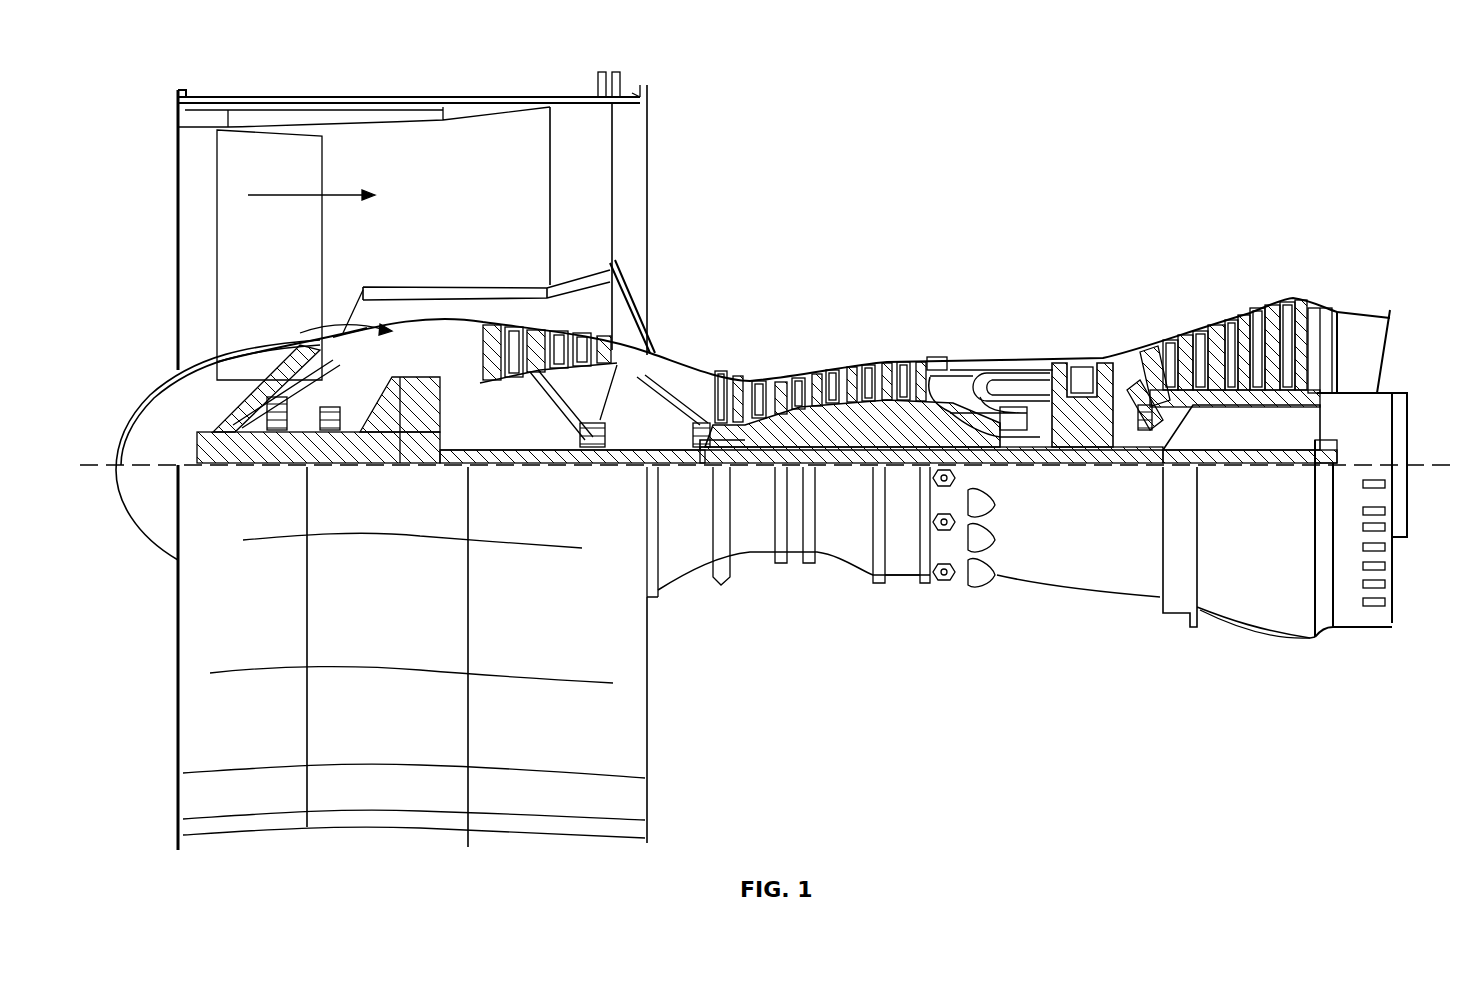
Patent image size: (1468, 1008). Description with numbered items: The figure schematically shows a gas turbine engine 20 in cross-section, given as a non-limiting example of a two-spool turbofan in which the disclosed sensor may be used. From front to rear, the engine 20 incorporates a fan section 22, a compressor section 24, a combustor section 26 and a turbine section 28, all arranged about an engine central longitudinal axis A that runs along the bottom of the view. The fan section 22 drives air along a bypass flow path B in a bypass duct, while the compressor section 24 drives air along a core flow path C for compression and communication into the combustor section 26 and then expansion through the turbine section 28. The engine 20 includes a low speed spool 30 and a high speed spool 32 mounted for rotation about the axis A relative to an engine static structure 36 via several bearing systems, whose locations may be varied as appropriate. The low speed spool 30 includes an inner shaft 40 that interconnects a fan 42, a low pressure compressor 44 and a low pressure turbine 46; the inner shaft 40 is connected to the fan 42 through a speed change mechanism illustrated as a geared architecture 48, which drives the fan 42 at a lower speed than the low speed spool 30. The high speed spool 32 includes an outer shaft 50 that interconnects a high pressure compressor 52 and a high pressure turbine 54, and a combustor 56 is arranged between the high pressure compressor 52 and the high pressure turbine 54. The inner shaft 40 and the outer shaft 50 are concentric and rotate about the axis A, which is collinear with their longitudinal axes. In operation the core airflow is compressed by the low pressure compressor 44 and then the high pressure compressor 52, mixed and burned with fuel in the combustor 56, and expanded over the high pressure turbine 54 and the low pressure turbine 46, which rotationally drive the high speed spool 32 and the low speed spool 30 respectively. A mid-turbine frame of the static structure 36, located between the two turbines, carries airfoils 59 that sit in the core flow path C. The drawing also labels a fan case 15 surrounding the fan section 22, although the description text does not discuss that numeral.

The fan case 15 is at (422, 105).
The gas turbine engine 20 is at (1279, 184).
The fan section 22 is at (372, 100).
The compressor section 24 is at (702, 336).
The combustor section 26 is at (976, 310).
The turbine section 28 is at (1166, 306).
The low speed spool 30 is at (866, 467).
The high speed spool 32 is at (898, 424).
The engine static structure 36 is at (906, 578).
The inner shaft 40 is at (665, 463).
The fan 42 is at (276, 246).
The low pressure compressor 44 is at (540, 345).
The low pressure turbine 46 is at (1247, 323).
The geared architecture 48 is at (415, 463).
The outer shaft 50 is at (1030, 465).
The high pressure compressor 52 is at (808, 430).
The high pressure turbine 54 is at (1078, 360).
The combustor 56 is at (1003, 385).
The airfoils 59 is at (1180, 410).
The engine central longitudinal axis A is at (1420, 465).
The bypass flow path B is at (312, 195).
The core flow path C is at (310, 330).